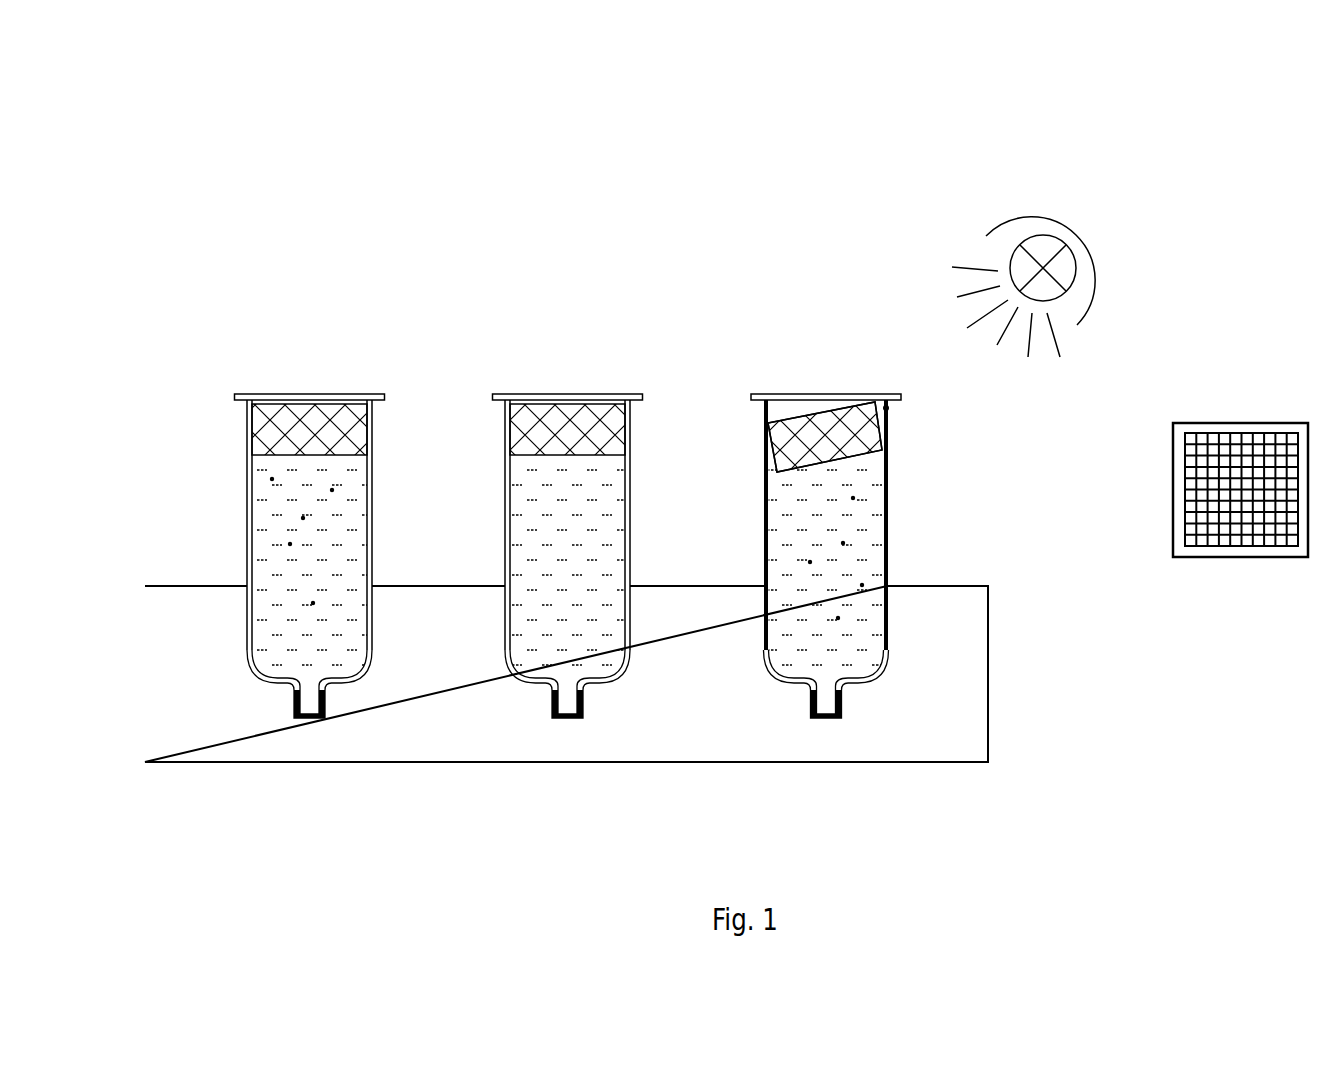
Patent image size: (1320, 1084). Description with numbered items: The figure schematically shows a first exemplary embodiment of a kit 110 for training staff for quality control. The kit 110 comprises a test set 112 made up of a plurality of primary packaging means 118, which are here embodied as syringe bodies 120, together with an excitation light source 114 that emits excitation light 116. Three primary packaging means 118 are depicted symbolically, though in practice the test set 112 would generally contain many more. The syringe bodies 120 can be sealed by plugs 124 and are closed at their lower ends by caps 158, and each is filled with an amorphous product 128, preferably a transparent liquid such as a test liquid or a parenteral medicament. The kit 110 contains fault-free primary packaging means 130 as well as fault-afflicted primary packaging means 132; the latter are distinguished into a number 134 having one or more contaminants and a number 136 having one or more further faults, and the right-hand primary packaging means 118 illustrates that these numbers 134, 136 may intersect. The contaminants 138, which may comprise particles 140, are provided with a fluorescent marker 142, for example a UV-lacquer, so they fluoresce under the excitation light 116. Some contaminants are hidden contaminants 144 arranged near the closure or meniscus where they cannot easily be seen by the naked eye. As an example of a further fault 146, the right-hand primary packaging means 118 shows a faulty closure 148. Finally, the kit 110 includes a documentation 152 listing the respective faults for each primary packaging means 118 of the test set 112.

The kit 110 is at (812, 162).
The test set 112 is at (418, 303).
The excitation light source 114 is at (1118, 207).
The excitation light 116 is at (962, 249).
The primary packaging means 118 is at (256, 514).
The syringe body 120 is at (247, 396).
The plug 124 is at (325, 410).
The amorphous product 128 is at (268, 511).
The fault-free primary packaging means 130 is at (576, 365).
The fault-afflicted primary packaging means 132 is at (566, 504).
The number of primary packaging means with contaminants 134 is at (281, 365).
The number of primary packaging means with further faults 136 is at (868, 556).
The contaminant 138 is at (566, 548).
The particle 140 is at (566, 548).
The fluorescent marker 142 is at (288, 545).
The hidden contaminant 144 is at (768, 447).
The further fault 146 is at (966, 417).
The faulty closure 148 is at (890, 410).
The documentation 152 is at (1247, 396).
The cap 158 is at (307, 718).